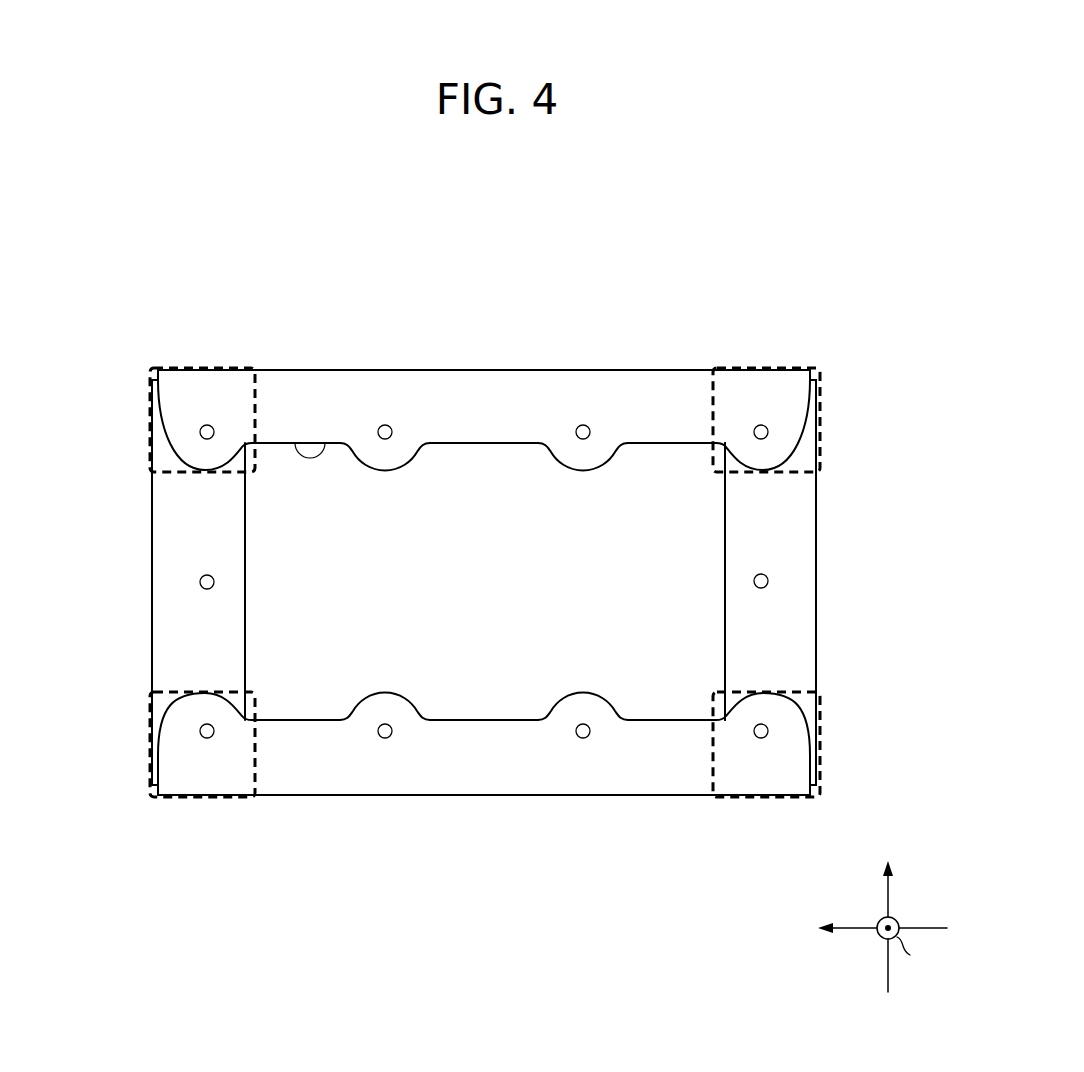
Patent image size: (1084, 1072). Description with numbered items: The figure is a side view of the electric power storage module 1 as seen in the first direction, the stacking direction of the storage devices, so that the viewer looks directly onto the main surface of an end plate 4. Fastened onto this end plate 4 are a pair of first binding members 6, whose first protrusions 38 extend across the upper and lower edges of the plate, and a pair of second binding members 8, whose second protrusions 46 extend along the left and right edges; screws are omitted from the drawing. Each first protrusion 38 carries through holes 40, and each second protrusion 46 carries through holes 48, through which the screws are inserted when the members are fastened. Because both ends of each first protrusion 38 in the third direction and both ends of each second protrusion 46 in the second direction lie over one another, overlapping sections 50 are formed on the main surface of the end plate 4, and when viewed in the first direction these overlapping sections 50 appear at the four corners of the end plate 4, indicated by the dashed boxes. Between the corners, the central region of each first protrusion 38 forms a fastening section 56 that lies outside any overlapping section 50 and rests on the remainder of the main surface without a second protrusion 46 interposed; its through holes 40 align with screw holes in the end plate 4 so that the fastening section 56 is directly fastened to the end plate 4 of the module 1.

The electric power storage module 1 is at (471, 939).
The end plate 4 is at (647, 690).
The first binding member 6 is at (637, 365).
The second binding member 8 is at (826, 503).
The first protrusion 38 is at (294, 456).
The through hole 40 is at (392, 426).
The second protrusion 46 is at (790, 650).
The through hole 48 is at (768, 581).
The overlapping section 50 is at (148, 407).
The fastening section 56 is at (523, 397).